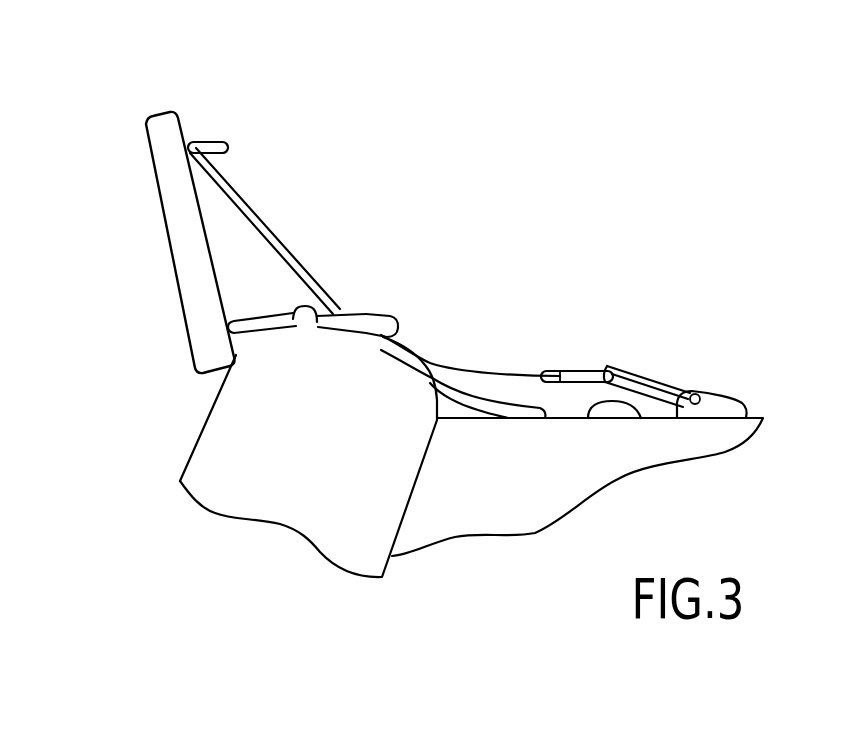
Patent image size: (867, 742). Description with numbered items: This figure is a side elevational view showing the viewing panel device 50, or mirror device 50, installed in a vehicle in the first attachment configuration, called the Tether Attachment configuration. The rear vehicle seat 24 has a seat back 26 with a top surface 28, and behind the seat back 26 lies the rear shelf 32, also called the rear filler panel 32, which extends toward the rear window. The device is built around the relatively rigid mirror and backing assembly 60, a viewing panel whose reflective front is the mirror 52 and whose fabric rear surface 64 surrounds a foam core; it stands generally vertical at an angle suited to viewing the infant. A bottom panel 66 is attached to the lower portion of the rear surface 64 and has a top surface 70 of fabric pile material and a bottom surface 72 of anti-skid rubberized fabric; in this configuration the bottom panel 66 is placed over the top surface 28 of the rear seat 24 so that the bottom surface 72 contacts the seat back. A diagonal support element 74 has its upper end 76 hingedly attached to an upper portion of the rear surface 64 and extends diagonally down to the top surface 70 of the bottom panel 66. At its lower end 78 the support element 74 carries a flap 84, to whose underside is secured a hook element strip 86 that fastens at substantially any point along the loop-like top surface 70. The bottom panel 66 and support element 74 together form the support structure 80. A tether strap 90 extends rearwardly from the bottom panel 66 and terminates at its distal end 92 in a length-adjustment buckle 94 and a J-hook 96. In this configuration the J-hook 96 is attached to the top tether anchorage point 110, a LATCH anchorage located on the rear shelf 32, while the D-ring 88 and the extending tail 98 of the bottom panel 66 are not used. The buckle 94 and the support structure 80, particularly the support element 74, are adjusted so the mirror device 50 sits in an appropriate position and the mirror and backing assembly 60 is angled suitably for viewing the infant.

The rear vehicle seat 24 is at (352, 612).
The seat back 26 is at (296, 444).
The top surface 28 is at (302, 326).
The rear shelf 32 is at (641, 418).
The viewing panel device 50 is at (440, 110).
The mirror 52 is at (164, 202).
The mirror and backing assembly 60 is at (160, 116).
The rear surface 64 is at (206, 221).
The bottom panel 66 is at (357, 333).
The top surface 70 is at (298, 310).
The bottom surface 72 is at (284, 325).
The diagonal support element 74 is at (274, 238).
The upper end 76 is at (206, 152).
The lower end 78 is at (334, 312).
The support structure 80 is at (443, 183).
The flap 84 is at (369, 313).
The hook element strip 86 is at (375, 334).
The D-ring 88 is at (230, 153).
The tether strap 90 is at (459, 365).
The distal end 92 is at (573, 317).
The length-adjustment buckle 94 is at (587, 372).
The J-hook 96 is at (657, 380).
The extending tail 98 is at (480, 398).
The top tether anchorage point 110 is at (723, 395).